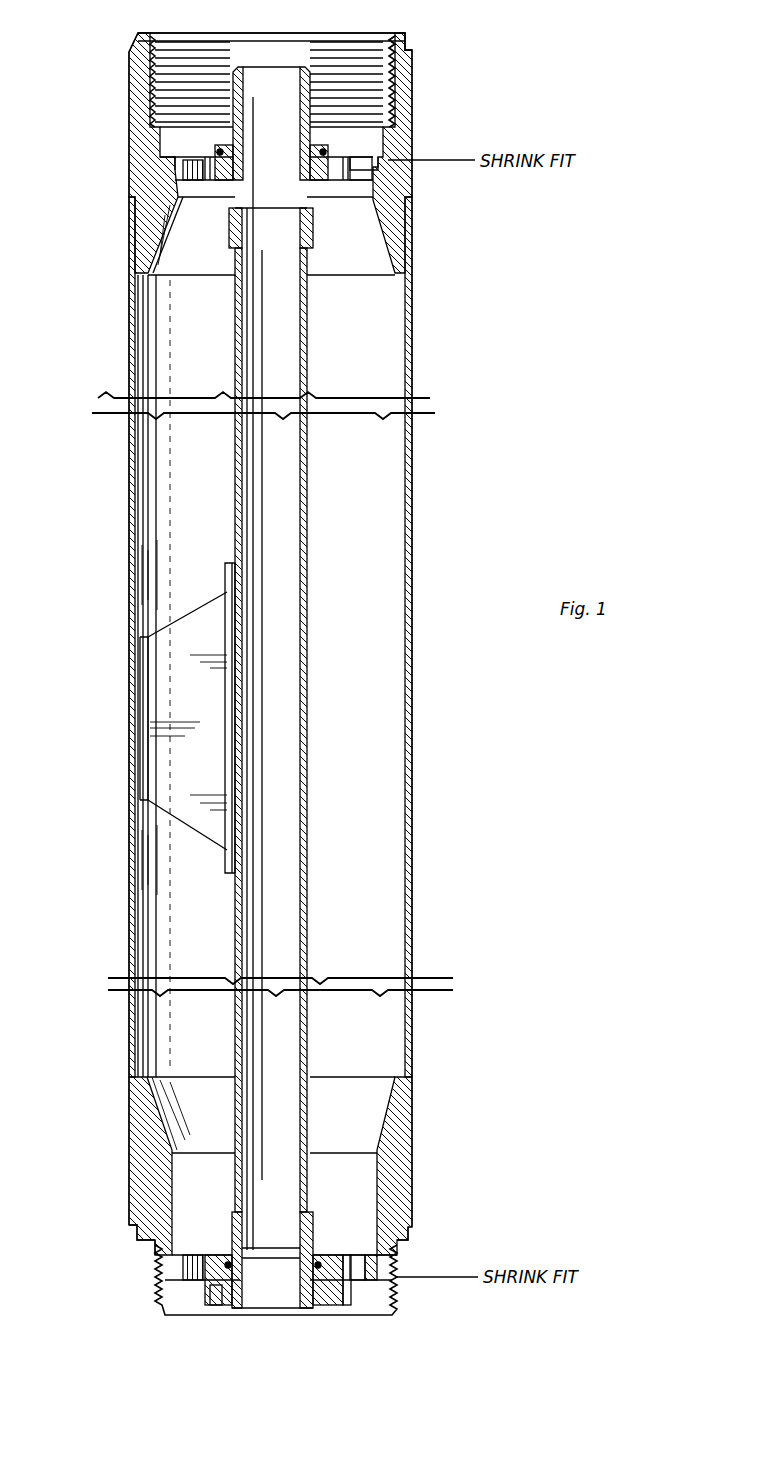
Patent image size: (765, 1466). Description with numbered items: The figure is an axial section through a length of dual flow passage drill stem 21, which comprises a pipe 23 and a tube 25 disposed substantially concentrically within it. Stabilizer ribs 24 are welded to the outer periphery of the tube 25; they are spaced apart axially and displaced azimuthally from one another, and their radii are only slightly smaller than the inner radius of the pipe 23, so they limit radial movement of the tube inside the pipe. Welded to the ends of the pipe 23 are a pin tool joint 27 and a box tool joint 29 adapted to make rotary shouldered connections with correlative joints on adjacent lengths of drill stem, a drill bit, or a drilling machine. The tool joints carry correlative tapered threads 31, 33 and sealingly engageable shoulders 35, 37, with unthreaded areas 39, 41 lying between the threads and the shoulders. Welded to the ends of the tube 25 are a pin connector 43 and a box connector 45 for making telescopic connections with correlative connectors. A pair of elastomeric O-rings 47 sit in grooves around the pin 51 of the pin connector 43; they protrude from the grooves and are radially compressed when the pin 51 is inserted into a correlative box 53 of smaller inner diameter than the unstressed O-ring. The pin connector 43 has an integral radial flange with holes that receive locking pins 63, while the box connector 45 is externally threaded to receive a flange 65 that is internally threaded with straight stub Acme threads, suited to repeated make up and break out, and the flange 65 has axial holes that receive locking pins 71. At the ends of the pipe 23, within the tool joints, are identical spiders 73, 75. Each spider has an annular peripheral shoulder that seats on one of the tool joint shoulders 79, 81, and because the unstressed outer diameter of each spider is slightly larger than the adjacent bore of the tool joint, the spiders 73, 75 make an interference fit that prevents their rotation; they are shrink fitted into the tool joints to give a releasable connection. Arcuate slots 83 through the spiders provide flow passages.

The dual flow passage drill stem 21 is at (124, 498).
The pipe 23 is at (413, 498).
The stabilizer ribs 24 is at (170, 712).
The tube 25 is at (308, 500).
The pin tool joint 27 is at (140, 1195).
The box tool joint 29 is at (147, 150).
The tapered threads 31 is at (160, 1300).
The tapered threads 33 is at (390, 94).
The sealingly engageable shoulder 35 is at (153, 1245).
The sealingly engageable shoulder 37 is at (408, 35).
The unthreaded area 39 is at (157, 1255).
The unthreaded area 41 is at (388, 45).
The pin connector 43 is at (280, 156).
The box connector 45 is at (284, 1292).
The O-rings 47 is at (243, 80).
The pin 51 is at (310, 97).
The box 53 is at (308, 1288).
The locking pins 63 is at (337, 146).
The flange 65 is at (203, 1295).
The locking pins 71 is at (353, 1295).
The spider 73 is at (383, 175).
The spider 75 is at (387, 1258).
The tool joint shoulder 79 is at (158, 168).
The tool joint shoulder 81 is at (410, 1272).
The arcuate slots 83 is at (353, 177).